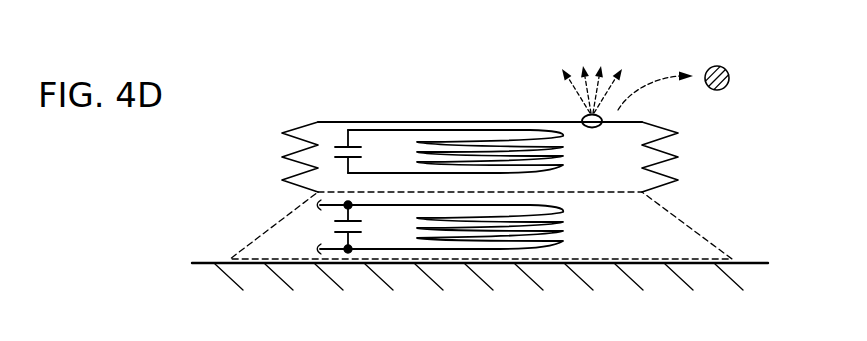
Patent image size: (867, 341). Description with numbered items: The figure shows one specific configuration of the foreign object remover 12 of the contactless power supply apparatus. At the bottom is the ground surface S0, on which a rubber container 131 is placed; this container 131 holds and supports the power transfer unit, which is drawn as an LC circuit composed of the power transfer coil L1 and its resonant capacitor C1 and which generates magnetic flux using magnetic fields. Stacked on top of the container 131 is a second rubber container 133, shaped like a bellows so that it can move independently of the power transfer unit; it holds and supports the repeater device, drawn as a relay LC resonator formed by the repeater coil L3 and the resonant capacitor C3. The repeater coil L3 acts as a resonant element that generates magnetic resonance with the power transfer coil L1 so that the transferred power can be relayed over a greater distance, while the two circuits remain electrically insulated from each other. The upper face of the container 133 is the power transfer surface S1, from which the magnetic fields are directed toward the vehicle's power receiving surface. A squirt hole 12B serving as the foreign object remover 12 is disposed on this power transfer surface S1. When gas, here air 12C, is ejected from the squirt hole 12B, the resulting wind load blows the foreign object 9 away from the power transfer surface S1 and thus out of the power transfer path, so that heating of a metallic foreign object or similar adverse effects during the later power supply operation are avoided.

The foreign object remover 12 is at (565, 64).
The squirt hole 12B is at (586, 118).
The air 12C is at (591, 71).
The foreign object 9 is at (729, 74).
The power transfer surface S1 is at (413, 121).
The ground surface S0 is at (745, 262).
The container 133 is at (282, 133).
The container 131 is at (282, 219).
The resonant capacitor C3 is at (340, 145).
The repeater coil L3 is at (565, 163).
The resonant capacitor C1 is at (347, 236).
The power transfer coil L1 is at (565, 239).